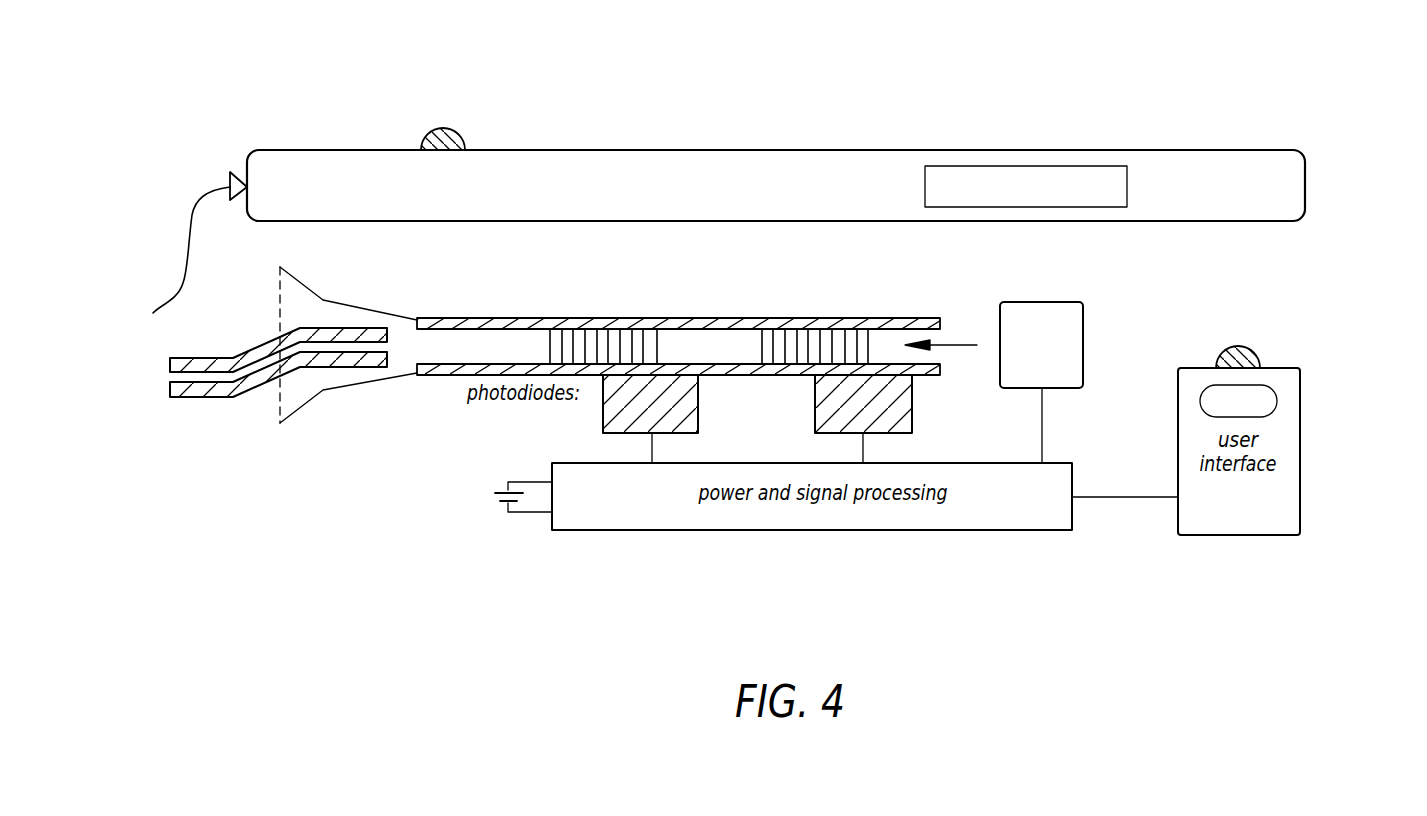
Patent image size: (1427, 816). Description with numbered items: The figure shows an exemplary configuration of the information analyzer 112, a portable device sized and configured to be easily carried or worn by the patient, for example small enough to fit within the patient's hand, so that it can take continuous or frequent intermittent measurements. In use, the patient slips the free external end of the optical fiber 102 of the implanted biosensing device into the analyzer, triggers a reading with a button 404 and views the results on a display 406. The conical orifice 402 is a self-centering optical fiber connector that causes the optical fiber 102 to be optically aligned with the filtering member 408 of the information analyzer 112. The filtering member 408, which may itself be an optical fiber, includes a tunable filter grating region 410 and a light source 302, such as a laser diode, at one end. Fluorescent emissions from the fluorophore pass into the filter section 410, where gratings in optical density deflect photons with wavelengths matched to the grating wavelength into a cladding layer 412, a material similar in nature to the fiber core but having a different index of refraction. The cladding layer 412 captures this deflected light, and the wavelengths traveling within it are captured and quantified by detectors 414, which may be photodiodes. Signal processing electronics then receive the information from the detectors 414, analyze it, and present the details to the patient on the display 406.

The optical fiber 102 is at (173, 290).
The information analyzer 112 is at (150, 434).
The light source 302 is at (1042, 302).
The conical orifice 402 is at (243, 173).
The button 404 is at (442, 128).
The display 406 is at (1127, 185).
The filtering member 408 is at (440, 318).
The tunable filter grating region 410 is at (583, 340).
The cladding layer 412 is at (702, 318).
The detectors 414 is at (698, 400).